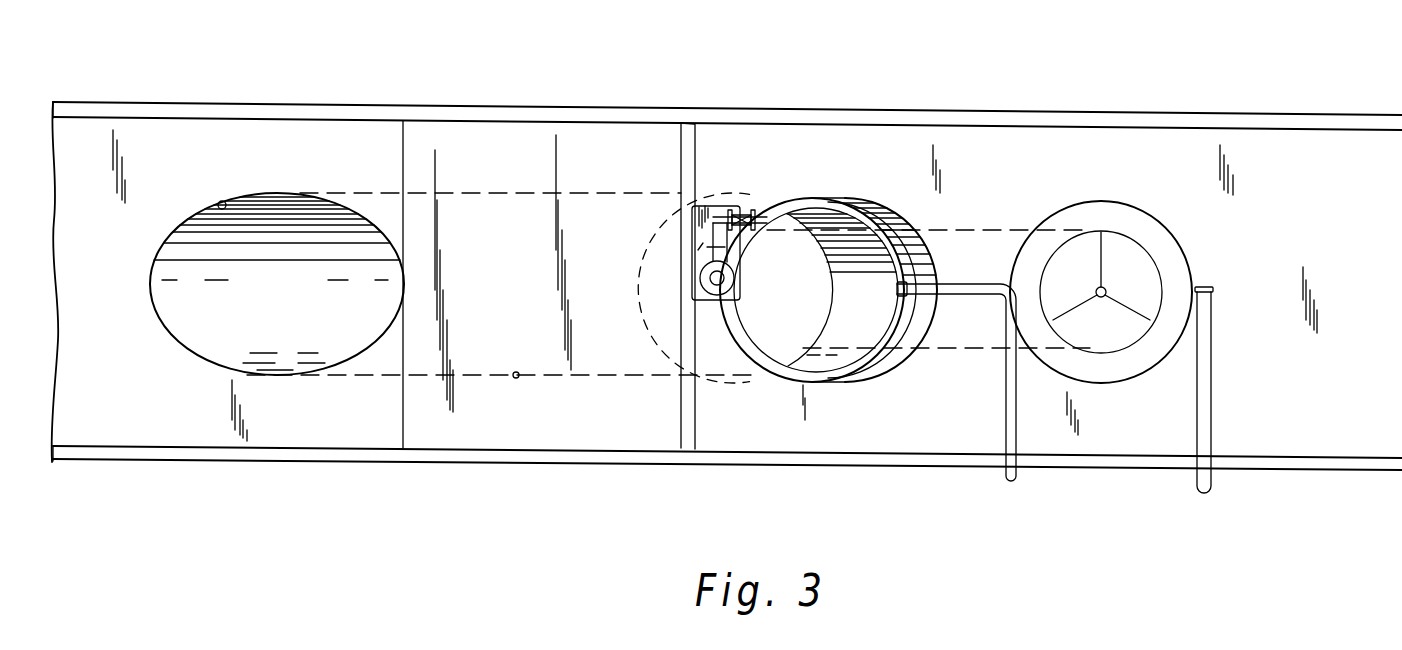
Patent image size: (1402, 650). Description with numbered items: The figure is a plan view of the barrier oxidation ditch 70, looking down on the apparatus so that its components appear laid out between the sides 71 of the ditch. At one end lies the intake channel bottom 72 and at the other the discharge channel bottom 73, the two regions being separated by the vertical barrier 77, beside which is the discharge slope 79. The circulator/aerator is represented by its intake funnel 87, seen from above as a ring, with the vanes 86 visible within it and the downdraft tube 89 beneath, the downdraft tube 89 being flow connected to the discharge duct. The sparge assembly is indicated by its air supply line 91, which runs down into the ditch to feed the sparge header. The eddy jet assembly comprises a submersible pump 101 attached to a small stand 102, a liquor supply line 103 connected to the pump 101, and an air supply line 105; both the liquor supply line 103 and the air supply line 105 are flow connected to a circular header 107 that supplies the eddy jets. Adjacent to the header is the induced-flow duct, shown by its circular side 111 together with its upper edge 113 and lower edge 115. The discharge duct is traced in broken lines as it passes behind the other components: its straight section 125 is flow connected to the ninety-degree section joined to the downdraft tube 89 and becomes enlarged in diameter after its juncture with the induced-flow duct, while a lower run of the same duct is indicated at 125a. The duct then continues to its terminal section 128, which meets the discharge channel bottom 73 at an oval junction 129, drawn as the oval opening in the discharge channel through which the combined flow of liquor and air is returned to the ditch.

The barrier oxidation ditch 70 is at (870, 98).
The sides 71 is at (1338, 460).
The intake channel bottom 72 is at (1370, 244).
The discharge channel bottom 73 is at (105, 291).
The vertical barrier 77 is at (681, 168).
The discharge slope 79 is at (530, 284).
The vanes 86 is at (1140, 310).
The intake funnel 87 is at (1188, 255).
The downdraft tube 89 is at (1128, 348).
The air supply line 91 is at (1212, 328).
The submersible pump 101 is at (710, 279).
The small stand 102 is at (742, 263).
The liquor supply line 103 is at (720, 207).
The air supply line 105 is at (1006, 403).
The circular header 107 is at (913, 257).
The circular side 111 is at (871, 313).
The upper edge 113 is at (927, 267).
The lower edge 115 is at (639, 291).
The straight section 125 is at (932, 345).
The lower web path 125a is at (516, 381).
The terminal section 128 is at (290, 283).
The oval junction 129 is at (220, 201).